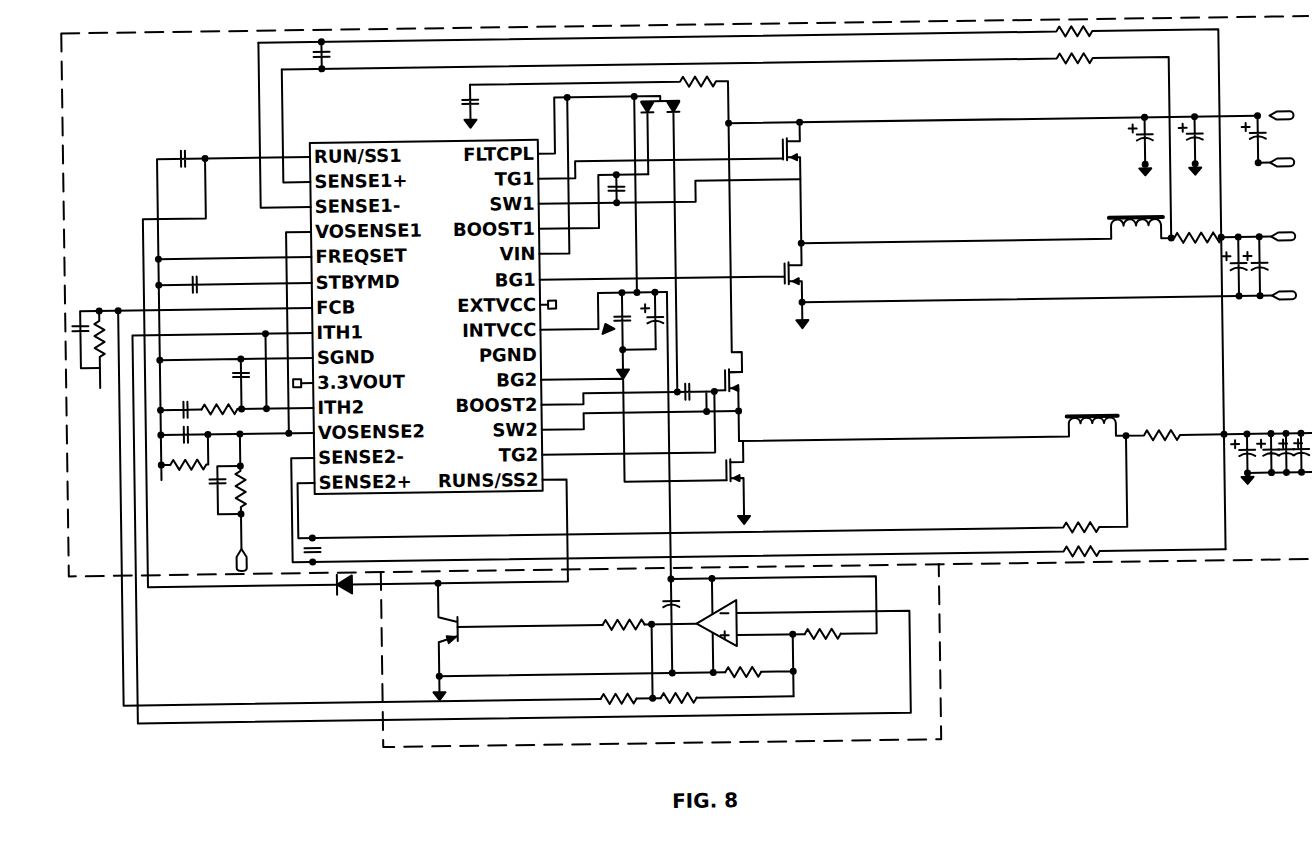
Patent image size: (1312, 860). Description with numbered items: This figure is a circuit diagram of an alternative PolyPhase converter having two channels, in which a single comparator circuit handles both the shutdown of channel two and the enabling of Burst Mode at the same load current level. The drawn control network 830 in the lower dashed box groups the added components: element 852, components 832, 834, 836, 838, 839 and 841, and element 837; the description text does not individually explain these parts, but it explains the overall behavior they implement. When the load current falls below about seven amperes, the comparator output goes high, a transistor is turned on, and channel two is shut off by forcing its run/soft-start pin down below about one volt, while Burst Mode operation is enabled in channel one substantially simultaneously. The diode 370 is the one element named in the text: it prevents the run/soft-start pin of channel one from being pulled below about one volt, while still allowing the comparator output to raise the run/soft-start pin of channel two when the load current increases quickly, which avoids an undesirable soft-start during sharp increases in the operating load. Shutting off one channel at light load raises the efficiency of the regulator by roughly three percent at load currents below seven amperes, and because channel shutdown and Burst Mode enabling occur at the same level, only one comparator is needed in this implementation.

The diode 370 is at (337, 593).
The feedback control circuit 830 is at (792, 596).
The resistor 832 is at (604, 622).
The capacitor 834 is at (661, 605).
The resistor 836 is at (817, 647).
The operational amplifier 837 is at (738, 604).
The resistor 838 is at (737, 681).
The resistor 839 is at (602, 697).
The resistor 841 is at (672, 705).
The transistor 852 is at (457, 618).